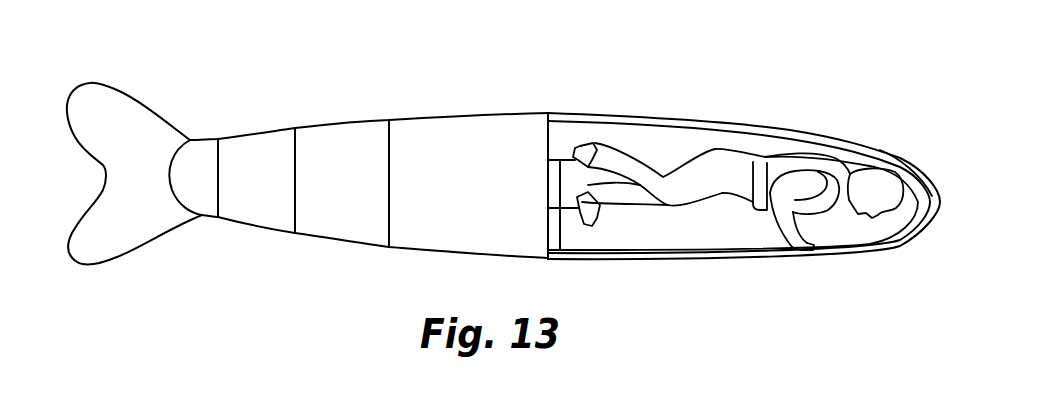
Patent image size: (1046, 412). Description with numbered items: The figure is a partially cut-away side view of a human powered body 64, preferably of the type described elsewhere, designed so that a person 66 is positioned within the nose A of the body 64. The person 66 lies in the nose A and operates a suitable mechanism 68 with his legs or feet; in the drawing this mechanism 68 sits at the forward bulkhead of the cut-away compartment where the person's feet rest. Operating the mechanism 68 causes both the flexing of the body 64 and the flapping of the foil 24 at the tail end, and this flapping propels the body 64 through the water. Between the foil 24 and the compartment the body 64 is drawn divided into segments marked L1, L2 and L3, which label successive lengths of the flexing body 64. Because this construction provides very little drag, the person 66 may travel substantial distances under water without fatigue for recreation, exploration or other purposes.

The foil 24 is at (157, 113).
The body 64 is at (425, 258).
The person 66 is at (740, 166).
The mechanism 68 is at (568, 210).
The first hull segment length L1 is at (467, 127).
The second hull segment length L2 is at (340, 135).
The third hull segment length L3 is at (263, 137).
The nose A is at (894, 156).